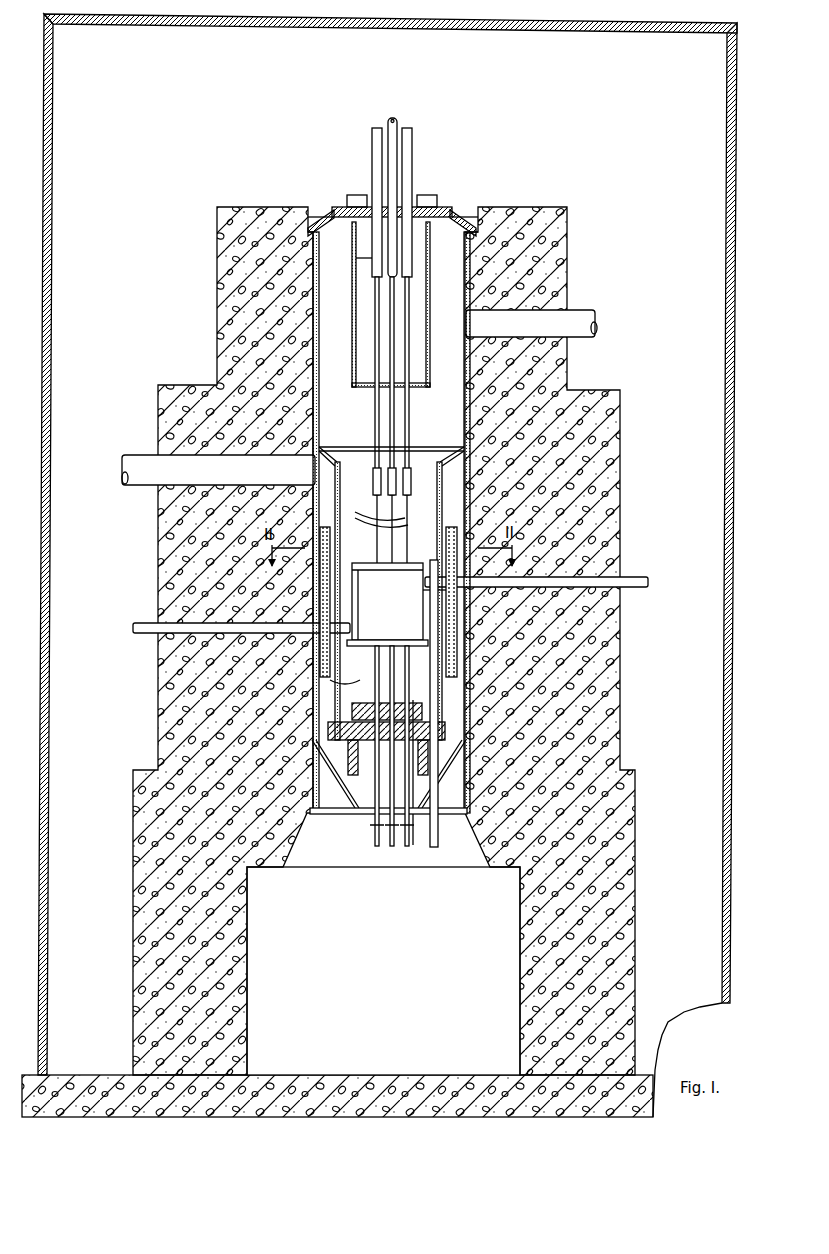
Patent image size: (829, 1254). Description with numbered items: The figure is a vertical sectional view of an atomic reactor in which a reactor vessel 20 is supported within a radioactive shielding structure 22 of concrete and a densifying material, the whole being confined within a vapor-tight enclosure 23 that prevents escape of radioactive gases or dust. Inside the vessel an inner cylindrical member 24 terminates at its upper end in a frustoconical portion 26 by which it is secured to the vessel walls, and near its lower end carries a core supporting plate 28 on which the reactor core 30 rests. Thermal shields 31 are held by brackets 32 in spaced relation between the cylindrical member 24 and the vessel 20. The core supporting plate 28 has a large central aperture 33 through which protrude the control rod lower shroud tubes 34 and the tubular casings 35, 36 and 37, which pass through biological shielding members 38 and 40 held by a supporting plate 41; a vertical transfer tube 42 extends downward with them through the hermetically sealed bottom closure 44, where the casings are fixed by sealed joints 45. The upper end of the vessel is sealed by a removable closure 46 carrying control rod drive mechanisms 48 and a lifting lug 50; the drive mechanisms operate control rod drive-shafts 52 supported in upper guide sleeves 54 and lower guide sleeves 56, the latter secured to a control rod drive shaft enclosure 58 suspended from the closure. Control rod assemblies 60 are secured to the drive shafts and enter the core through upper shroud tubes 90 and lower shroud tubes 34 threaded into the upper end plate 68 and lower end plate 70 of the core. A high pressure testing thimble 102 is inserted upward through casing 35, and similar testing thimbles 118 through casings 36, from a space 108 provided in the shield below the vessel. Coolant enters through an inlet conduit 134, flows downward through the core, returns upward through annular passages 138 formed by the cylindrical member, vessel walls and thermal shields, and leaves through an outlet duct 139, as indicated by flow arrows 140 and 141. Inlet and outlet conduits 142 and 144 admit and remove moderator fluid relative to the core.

The reactor vessel 20 is at (470, 482).
The radioactive shielding structure 22 is at (158, 565).
The vapor-tight enclosure 23 is at (50, 66).
The inner cylindrical member 24 is at (444, 510).
The frustoconical portion 26 is at (438, 448).
The core supporting plate 28 is at (314, 650).
The reactor core 30 is at (387, 601).
The thermal shields 31 is at (456, 610).
The brackets 32 is at (312, 712).
The central aperture 33 is at (330, 660).
The control rod lower shroud tubes 34 is at (358, 700).
The tubular casing 35 is at (368, 570).
The tubular casings 36 is at (412, 570).
The tubular casing 37 is at (460, 806).
The biological shielding member 38 is at (422, 712).
The biological shielding member 40 is at (466, 760).
The supporting plate 41 is at (312, 745).
The vertical transfer tube 42 is at (438, 844).
The bottom closure 44 is at (352, 812).
The sealed joints 45 is at (360, 826).
The removable closure 46 is at (452, 212).
The control rod drive mechanisms 48 is at (356, 194).
The lifting lug 50 is at (397, 118).
The control rod drive-shafts 52 is at (404, 296).
The upper guide sleeves 54 is at (402, 246).
The lower guide sleeves 56 is at (392, 392).
The control rod drive shaft enclosure 58 is at (430, 272).
The control rod assemblies 60 is at (405, 558).
The upper end plate 68 is at (365, 605).
The lower end plate 70 is at (390, 638).
The upper shroud tubes 90 is at (366, 560).
The high pressure testing thimble 102 is at (367, 853).
The space 108 is at (440, 862).
The high pressure testing thimble 118 is at (366, 845).
The inlet conduit 134 is at (568, 310).
The annular passages 138 is at (320, 598).
The outlet duct 139 is at (138, 455).
The flow arrows 140 is at (352, 472).
The flow arrows 141 is at (490, 322).
The inlet conduit 142 is at (136, 622).
The outlet conduit 144 is at (640, 578).